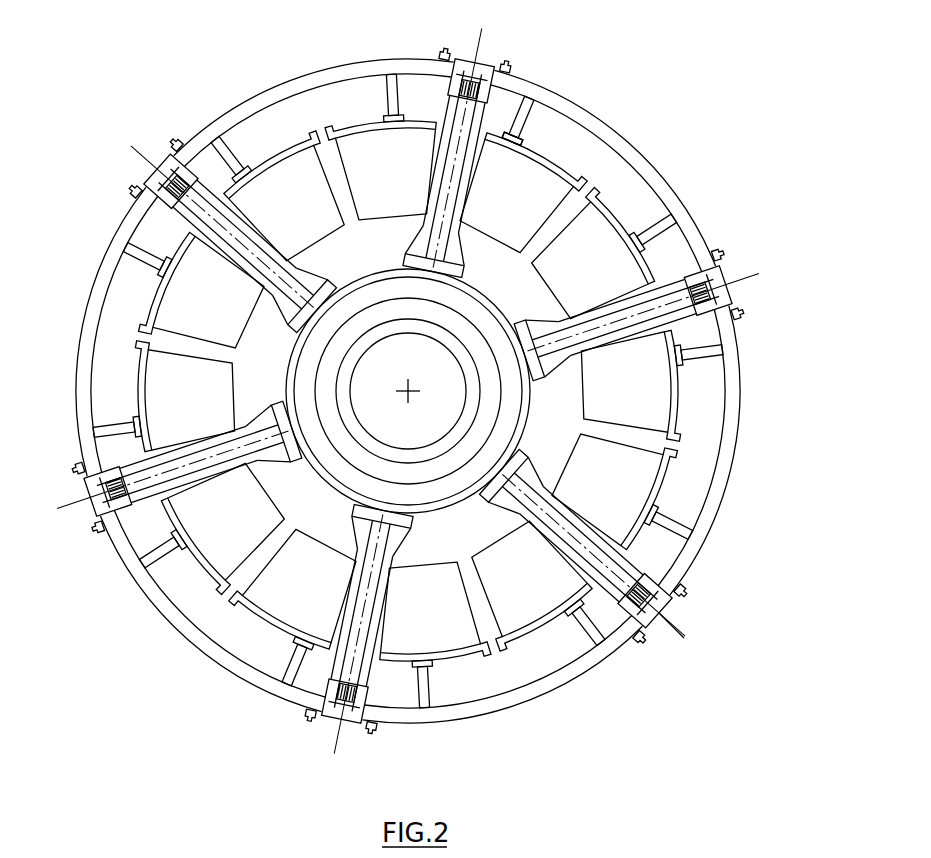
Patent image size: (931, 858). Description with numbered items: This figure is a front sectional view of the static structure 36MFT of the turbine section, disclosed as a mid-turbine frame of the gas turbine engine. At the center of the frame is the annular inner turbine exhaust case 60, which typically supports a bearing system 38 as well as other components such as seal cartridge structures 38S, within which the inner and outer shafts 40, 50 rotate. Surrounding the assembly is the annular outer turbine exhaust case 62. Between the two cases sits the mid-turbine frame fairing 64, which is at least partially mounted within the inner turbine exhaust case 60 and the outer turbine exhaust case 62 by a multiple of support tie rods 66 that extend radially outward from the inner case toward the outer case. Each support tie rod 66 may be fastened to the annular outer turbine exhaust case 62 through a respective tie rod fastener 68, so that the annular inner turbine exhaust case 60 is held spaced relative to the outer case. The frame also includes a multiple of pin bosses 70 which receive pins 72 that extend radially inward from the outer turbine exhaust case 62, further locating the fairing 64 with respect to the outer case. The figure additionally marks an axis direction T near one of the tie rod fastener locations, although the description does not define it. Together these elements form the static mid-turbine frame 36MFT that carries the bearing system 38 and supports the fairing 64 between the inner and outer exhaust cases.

The static structure mid-turbine frame 36MFT is at (644, 52).
The bearing system 38 is at (355, 303).
The seal cartridge structures 38S is at (408, 369).
The inner shaft 40 is at (472, 413).
The outer shaft 50 is at (488, 397).
The annular inner turbine exhaust case 60 is at (455, 512).
The annular outer turbine exhaust case 62 is at (734, 477).
The mid-turbine frame fairing 64 is at (669, 492).
The support tie rods 66 is at (448, 173).
The tie rod fasteners 68 is at (446, 58).
The pin bosses 70 is at (529, 141).
The pins 72 is at (527, 141).
The tangential axis T is at (670, 638).